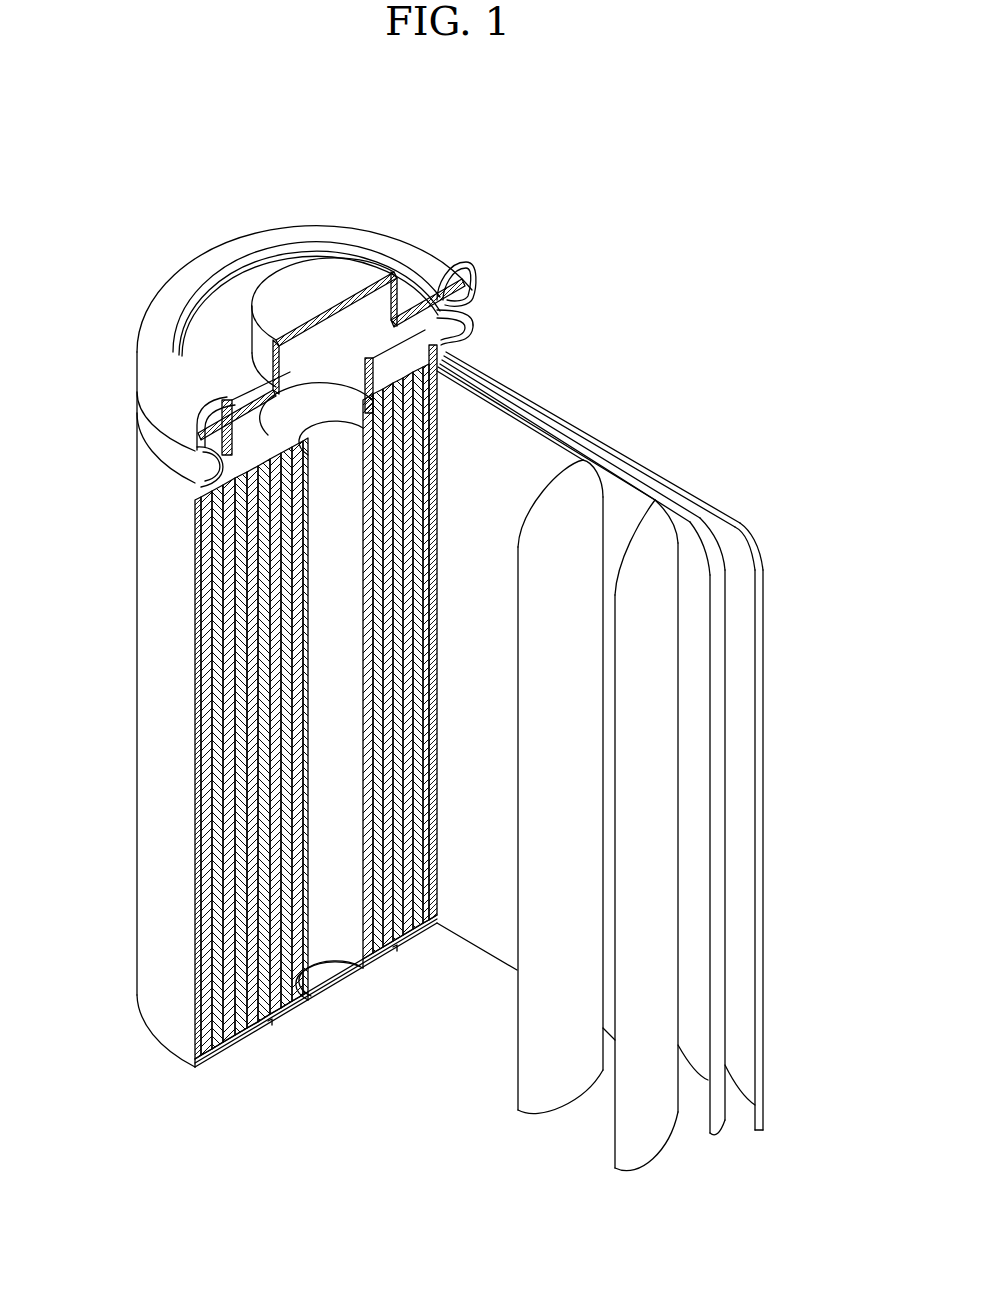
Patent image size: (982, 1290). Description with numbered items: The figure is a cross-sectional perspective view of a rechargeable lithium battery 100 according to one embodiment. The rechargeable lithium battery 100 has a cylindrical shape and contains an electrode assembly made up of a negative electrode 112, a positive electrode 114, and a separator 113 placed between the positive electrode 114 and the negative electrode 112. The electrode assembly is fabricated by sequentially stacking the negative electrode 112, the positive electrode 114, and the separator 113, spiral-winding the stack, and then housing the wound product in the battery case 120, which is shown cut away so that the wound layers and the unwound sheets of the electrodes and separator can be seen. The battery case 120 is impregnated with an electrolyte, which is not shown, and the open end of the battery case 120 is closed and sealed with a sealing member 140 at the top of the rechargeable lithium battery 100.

The rechargeable lithium battery 100 is at (503, 188).
The negative electrode 112 is at (758, 540).
The separator 113 is at (543, 430).
The positive electrode 114 is at (617, 472).
The battery case 120 is at (158, 598).
The sealing member 140 is at (271, 295).